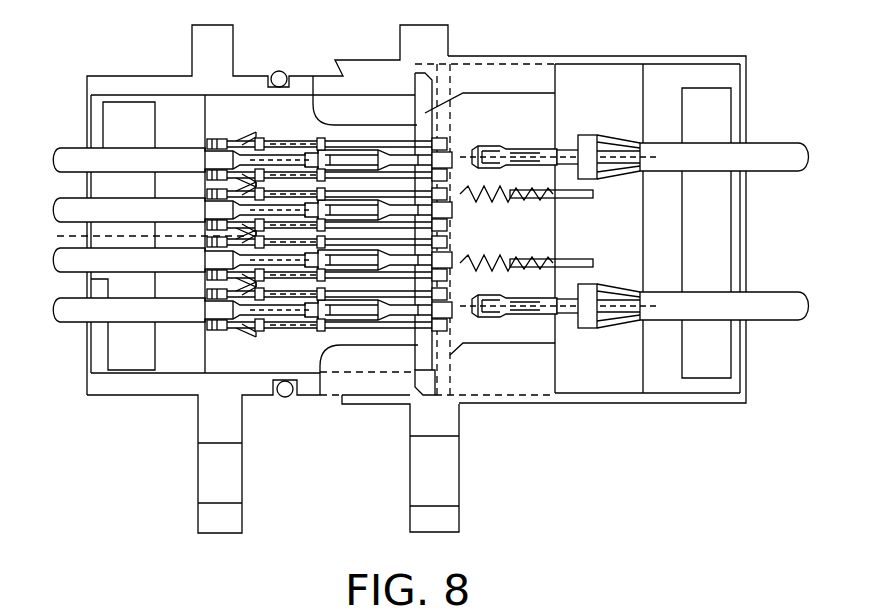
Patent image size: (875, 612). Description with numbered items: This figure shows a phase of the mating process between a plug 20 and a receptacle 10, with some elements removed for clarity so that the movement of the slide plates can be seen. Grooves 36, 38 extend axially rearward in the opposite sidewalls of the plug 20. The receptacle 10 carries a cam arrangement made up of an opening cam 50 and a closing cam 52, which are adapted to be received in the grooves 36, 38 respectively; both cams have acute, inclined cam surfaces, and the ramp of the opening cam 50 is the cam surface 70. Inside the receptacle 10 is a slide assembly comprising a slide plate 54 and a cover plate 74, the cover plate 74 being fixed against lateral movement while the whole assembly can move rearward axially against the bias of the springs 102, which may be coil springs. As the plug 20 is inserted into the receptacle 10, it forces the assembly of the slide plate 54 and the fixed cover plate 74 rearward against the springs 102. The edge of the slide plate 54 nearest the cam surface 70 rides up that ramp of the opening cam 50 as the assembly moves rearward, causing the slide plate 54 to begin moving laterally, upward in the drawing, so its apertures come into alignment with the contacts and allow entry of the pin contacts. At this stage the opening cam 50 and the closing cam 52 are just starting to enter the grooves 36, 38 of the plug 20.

The receptacle 10 is at (607, 412).
The plug 20 is at (176, 400).
The groove 36 is at (355, 352).
The groove 38 is at (362, 100).
The opening cam 50 is at (522, 385).
The closing cam 52 is at (520, 80).
The slide plate 54 is at (451, 317).
The cam surface 70 is at (450, 355).
The cover plate 74 is at (453, 115).
The springs 102 is at (490, 262).